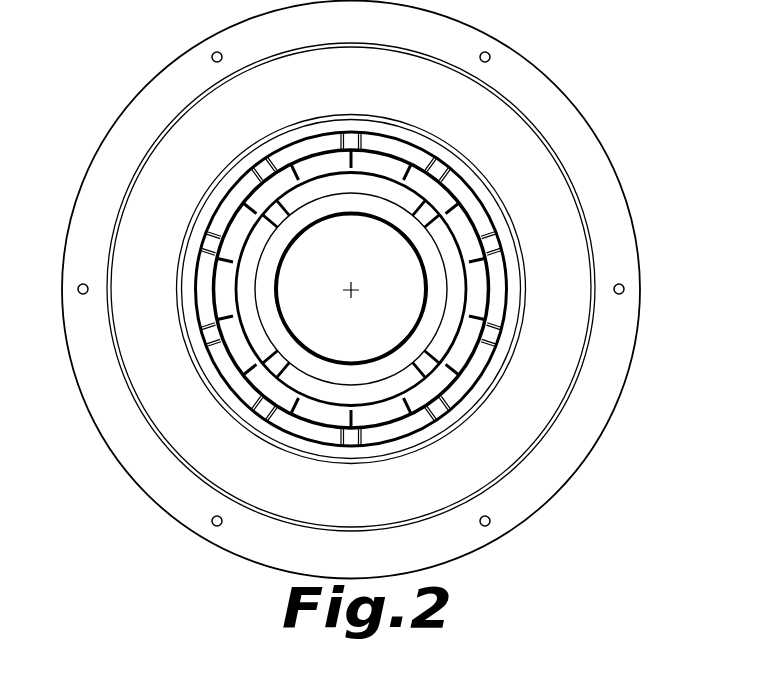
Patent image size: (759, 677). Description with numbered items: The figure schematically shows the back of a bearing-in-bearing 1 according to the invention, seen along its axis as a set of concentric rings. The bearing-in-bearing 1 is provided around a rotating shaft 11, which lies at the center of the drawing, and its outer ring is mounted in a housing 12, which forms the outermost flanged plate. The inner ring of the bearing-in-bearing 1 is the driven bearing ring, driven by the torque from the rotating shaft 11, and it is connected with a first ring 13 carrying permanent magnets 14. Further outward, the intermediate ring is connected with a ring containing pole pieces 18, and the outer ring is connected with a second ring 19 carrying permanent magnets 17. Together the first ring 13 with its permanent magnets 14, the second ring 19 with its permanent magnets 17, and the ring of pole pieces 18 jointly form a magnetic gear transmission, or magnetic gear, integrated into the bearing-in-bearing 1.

The bearing-in-bearing 1 is at (104, 72).
The rotating shaft 11 is at (373, 305).
The housing 12 is at (508, 153).
The first ring 13 is at (278, 320).
The permanent magnets 14 is at (317, 196).
The permanent magnets 17 is at (327, 140).
The pole pieces 18 is at (478, 293).
The second ring 19 is at (512, 325).